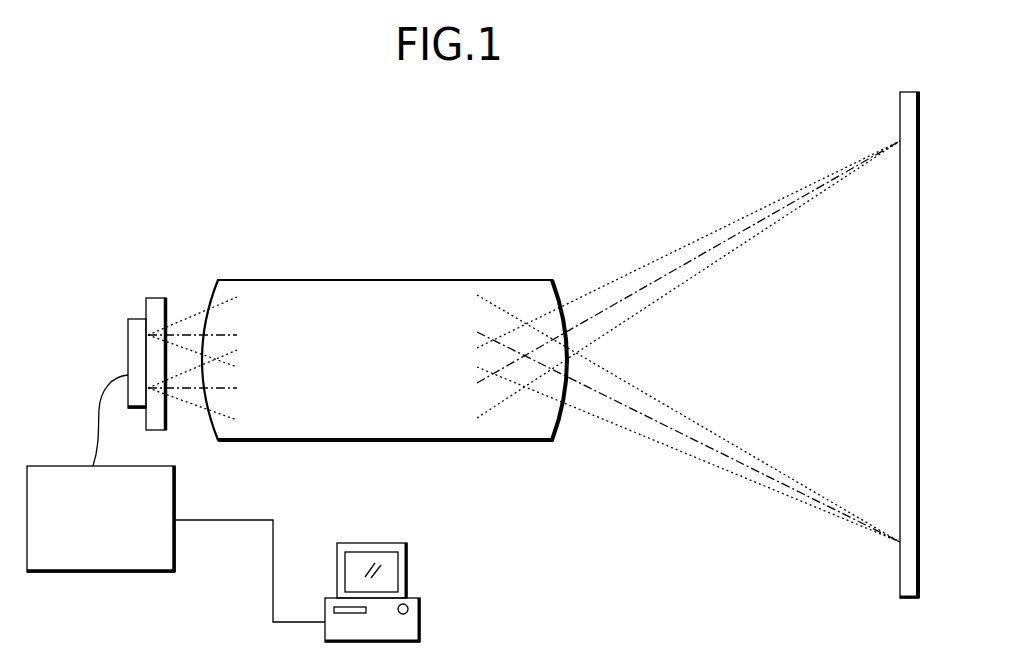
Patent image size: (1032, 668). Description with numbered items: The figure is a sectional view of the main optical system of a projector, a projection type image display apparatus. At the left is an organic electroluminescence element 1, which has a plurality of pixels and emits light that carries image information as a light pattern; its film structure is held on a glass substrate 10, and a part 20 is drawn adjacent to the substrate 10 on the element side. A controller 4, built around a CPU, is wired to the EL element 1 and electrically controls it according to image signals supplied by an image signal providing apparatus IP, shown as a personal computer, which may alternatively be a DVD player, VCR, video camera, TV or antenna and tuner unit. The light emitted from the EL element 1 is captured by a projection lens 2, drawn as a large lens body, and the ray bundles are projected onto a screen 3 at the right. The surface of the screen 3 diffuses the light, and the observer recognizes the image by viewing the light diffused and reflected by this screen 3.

The organic electroluminescence element 1 is at (127, 330).
The glass substrate 10 is at (167, 298).
The light emitting element 20 is at (130, 347).
The projection lens 2 is at (358, 290).
The screen 3 is at (899, 108).
The controller 4 is at (117, 563).
The image signal providing apparatus IP is at (408, 572).